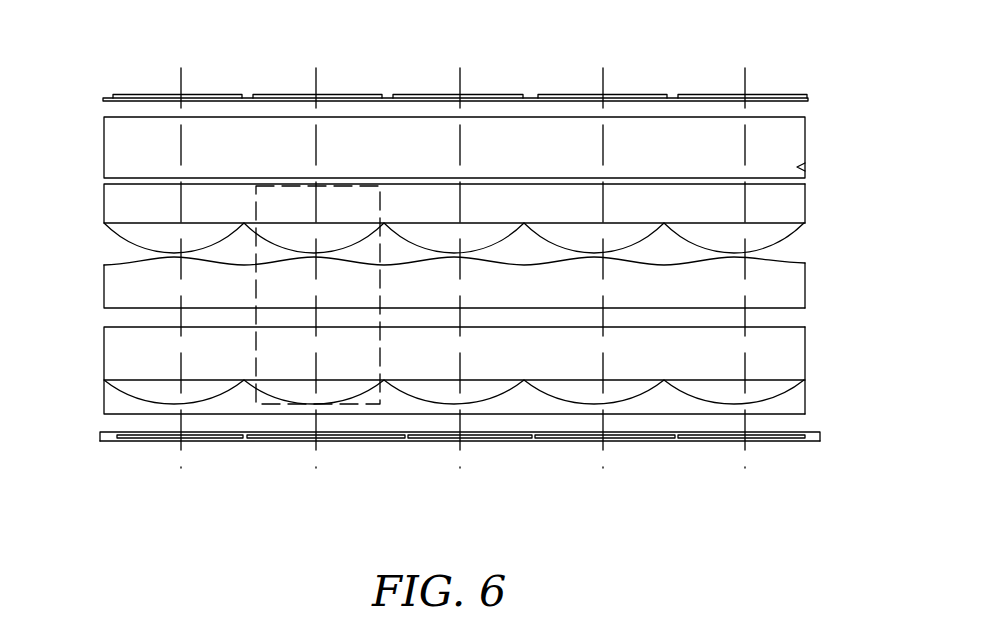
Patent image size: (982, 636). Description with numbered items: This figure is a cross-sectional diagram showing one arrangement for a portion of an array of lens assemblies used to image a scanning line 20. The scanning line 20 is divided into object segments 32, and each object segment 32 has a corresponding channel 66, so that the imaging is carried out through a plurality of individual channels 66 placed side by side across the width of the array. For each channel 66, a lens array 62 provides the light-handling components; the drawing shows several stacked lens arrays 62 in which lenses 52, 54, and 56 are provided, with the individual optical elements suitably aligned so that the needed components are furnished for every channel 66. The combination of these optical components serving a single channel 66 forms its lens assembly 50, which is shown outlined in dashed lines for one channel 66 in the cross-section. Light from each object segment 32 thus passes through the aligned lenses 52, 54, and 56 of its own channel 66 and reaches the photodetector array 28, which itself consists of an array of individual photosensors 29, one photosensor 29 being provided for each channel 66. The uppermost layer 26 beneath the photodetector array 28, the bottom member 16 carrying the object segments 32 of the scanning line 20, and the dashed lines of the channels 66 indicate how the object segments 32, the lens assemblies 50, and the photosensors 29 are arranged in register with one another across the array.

The substrate 16 is at (180, 442).
The scanning line 20 is at (212, 442).
The cover layer 26 is at (122, 152).
The photodetector array 28 is at (768, 98).
The photosensor 29 is at (703, 98).
The object segment 32 is at (635, 443).
The lens assembly 50 is at (380, 398).
The lens 52 is at (122, 358).
The lens 54 is at (122, 291).
The lens 56 is at (122, 210).
The lens array 62 is at (805, 205).
The channel 66 is at (457, 87).